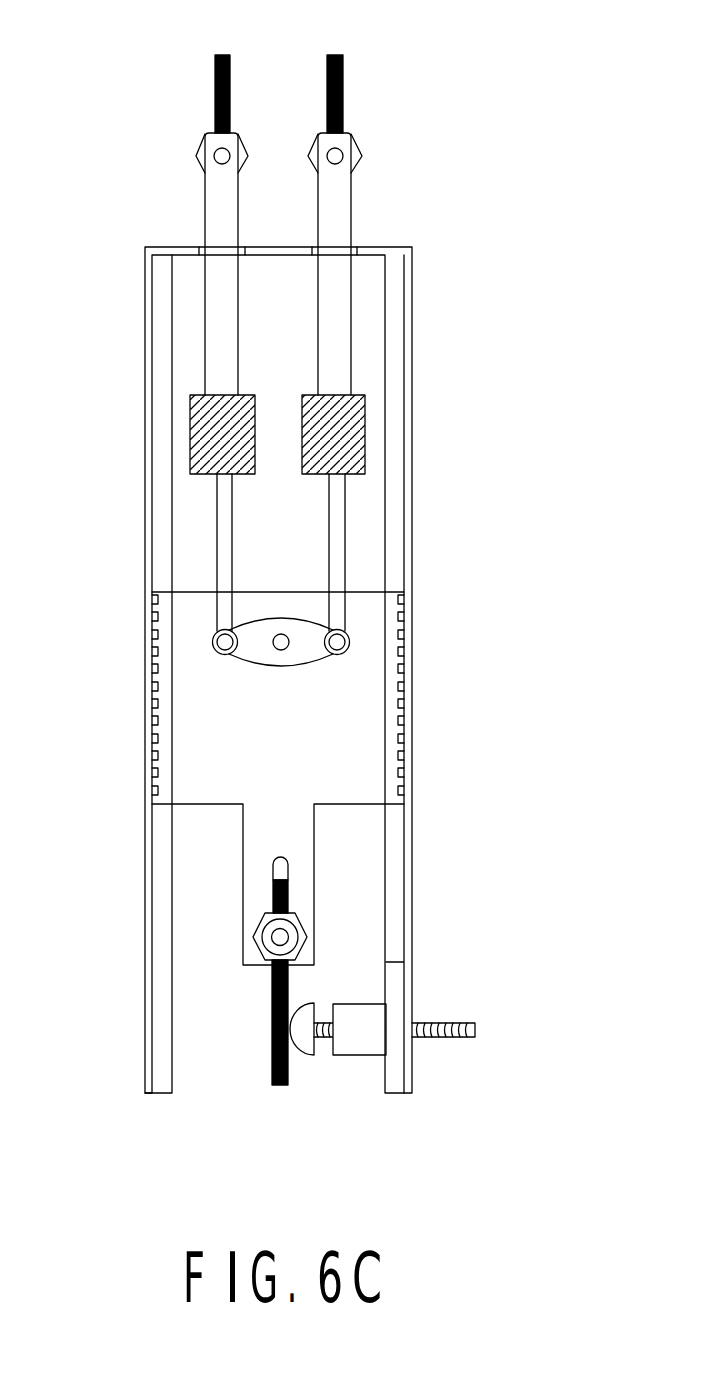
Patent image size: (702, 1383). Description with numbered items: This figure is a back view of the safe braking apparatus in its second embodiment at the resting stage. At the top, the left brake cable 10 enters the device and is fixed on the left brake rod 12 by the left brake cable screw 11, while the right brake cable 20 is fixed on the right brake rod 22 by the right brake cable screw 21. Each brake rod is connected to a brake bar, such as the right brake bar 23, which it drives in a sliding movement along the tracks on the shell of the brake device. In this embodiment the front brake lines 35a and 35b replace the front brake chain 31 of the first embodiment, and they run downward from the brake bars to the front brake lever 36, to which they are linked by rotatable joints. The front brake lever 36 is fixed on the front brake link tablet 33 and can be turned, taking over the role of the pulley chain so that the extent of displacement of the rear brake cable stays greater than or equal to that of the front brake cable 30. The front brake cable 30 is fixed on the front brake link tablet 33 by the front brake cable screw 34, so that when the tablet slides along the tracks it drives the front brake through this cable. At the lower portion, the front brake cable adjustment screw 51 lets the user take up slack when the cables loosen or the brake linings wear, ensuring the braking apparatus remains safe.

The left brake cable 10 is at (336, 53).
The left brake cable screw 11 is at (353, 140).
The left brake rod 12 is at (337, 302).
The right brake cable 20 is at (221, 53).
The right brake cable screw 21 is at (202, 140).
The right brake rod 22 is at (218, 297).
The right brake bar 23 is at (218, 425).
The front brake cable 30 is at (280, 1088).
The front brake chain 31 is at (338, 542).
The front brake link tablet 33 is at (352, 740).
The front brake cable screw 34 is at (302, 923).
The front brake line 35a is at (222, 539).
The front brake line 35b is at (340, 425).
The front brake lever 36 is at (316, 658).
The front brake cable adjustment screw 51 is at (476, 1024).